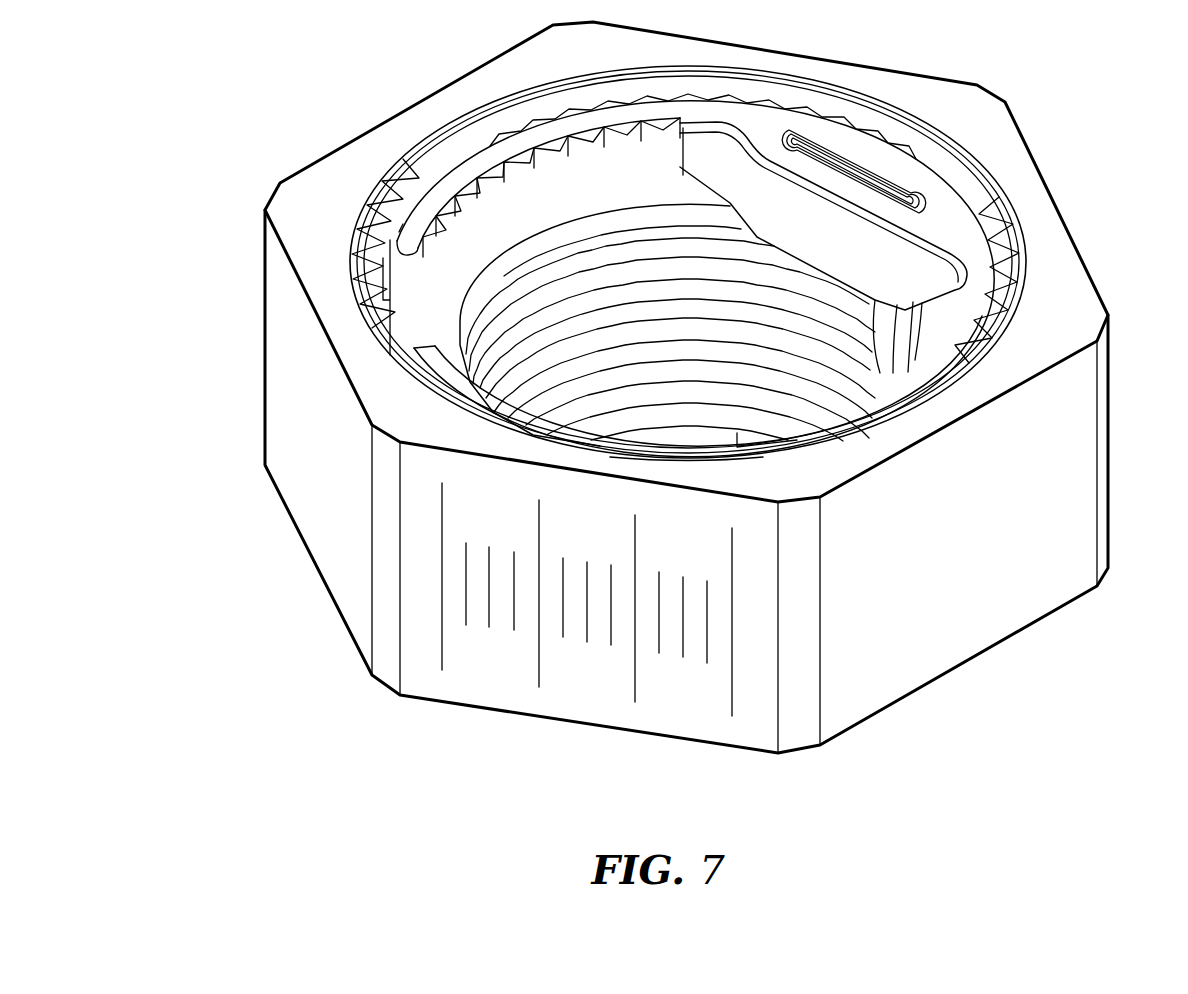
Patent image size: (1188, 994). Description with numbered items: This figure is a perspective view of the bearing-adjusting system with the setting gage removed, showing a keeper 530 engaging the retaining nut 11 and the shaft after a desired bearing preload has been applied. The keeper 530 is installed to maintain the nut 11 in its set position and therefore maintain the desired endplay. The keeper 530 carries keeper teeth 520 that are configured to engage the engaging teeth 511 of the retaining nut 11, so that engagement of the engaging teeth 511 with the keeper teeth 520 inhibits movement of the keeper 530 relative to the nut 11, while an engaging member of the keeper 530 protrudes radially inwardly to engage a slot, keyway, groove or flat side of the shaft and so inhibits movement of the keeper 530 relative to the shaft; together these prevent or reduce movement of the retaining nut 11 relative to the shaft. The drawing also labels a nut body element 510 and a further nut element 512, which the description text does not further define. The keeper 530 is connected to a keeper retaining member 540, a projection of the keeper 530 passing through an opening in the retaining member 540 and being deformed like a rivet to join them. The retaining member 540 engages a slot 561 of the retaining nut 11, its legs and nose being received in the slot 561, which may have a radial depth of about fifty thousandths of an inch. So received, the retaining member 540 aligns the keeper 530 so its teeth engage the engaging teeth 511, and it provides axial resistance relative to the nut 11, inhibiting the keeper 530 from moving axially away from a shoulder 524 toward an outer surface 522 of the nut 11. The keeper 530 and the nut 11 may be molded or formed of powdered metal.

The retaining nut 11 is at (1085, 264).
The nut body 510 is at (490, 664).
The engaging teeth 511 is at (573, 155).
The teeth of nut body 512 is at (973, 185).
The keeper teeth 520 is at (987, 202).
The outer surface 522 is at (311, 187).
The shoulder 524 is at (393, 310).
The keeper 530 is at (750, 208).
The keeper retaining member 540 is at (901, 150).
The slot 561 is at (366, 252).